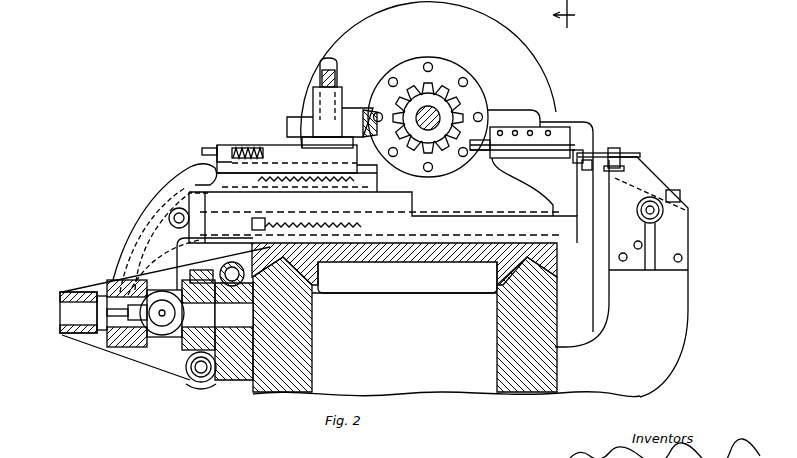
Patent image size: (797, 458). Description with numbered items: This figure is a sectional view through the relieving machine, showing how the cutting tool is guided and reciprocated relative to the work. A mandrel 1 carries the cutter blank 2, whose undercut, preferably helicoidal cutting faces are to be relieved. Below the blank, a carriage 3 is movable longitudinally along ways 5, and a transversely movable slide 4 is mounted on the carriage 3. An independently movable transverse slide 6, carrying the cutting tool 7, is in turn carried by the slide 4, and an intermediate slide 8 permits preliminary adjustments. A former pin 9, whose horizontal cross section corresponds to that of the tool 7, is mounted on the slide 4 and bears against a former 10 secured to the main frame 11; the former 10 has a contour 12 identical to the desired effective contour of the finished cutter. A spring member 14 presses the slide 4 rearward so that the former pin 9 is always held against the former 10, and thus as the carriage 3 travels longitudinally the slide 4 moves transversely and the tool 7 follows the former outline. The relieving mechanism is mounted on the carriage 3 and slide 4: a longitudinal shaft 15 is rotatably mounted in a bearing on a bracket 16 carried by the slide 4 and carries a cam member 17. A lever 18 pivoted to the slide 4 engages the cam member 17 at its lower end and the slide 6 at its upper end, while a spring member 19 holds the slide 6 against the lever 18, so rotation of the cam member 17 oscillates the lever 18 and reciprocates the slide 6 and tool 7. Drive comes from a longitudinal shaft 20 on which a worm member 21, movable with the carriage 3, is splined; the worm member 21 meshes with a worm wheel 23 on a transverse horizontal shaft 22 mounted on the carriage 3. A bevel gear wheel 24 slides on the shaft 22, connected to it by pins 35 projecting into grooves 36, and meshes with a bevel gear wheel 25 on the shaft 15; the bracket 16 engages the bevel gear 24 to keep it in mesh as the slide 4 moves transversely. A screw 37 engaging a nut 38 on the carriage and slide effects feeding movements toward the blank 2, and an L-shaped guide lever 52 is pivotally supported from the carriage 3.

The mandrel 1 is at (440, 138).
The cutter blank 2 is at (571, 14).
The carriage 3 is at (440, 262).
The transversely movable slide 4 is at (425, 191).
The ways 5 is at (319, 282).
The transverse slide 6 is at (377, 184).
The cutting tool 7 is at (300, 118).
The intermediate slide 8 is at (272, 148).
The former pin 9 is at (590, 135).
The former 10 is at (612, 148).
The main frame 11 is at (688, 300).
The contour 12 is at (470, 108).
The spring member 14 is at (345, 226).
The longitudinal shaft 15 is at (170, 325).
The bracket 16 is at (135, 228).
The cam member 17 is at (150, 350).
The lever 18 is at (188, 177).
The spring member 19 is at (262, 175).
The longitudinal shaft 20 is at (205, 395).
The worm member 21 is at (192, 380).
The transverse horizontal shaft 22 is at (105, 292).
The worm wheel 23 is at (215, 309).
The bevel gear wheel 24 is at (118, 280).
The bevel gear wheel 25 is at (163, 335).
The pins 35 is at (120, 318).
The grooves 36 is at (107, 312).
The screw 37 is at (245, 240).
The nut 38 is at (212, 268).
The L-shaped guide lever 52 is at (483, 158).